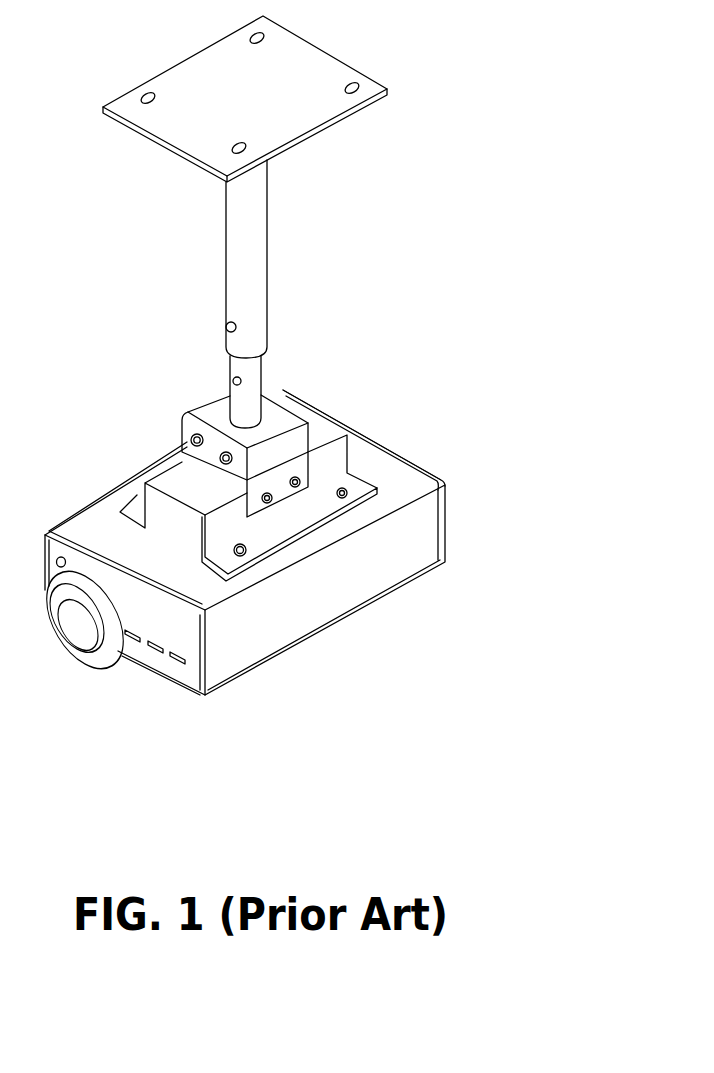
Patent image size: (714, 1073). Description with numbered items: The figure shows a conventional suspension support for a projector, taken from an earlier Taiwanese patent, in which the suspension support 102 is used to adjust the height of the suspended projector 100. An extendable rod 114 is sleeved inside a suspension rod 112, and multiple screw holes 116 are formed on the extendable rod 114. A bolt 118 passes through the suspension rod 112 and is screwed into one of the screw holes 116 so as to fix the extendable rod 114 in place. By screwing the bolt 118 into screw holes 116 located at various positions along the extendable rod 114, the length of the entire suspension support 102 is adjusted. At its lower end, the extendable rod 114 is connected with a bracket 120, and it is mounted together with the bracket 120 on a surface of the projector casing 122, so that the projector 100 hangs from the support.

The projector 100 is at (335, 625).
The suspension support 102 is at (105, 136).
The suspension rod 112 is at (238, 247).
The extendable rod 114 is at (257, 370).
The screw hole 116 is at (233, 381).
The bolt 118 is at (226, 327).
The bracket 120 is at (313, 423).
The projector casing 122 is at (413, 462).